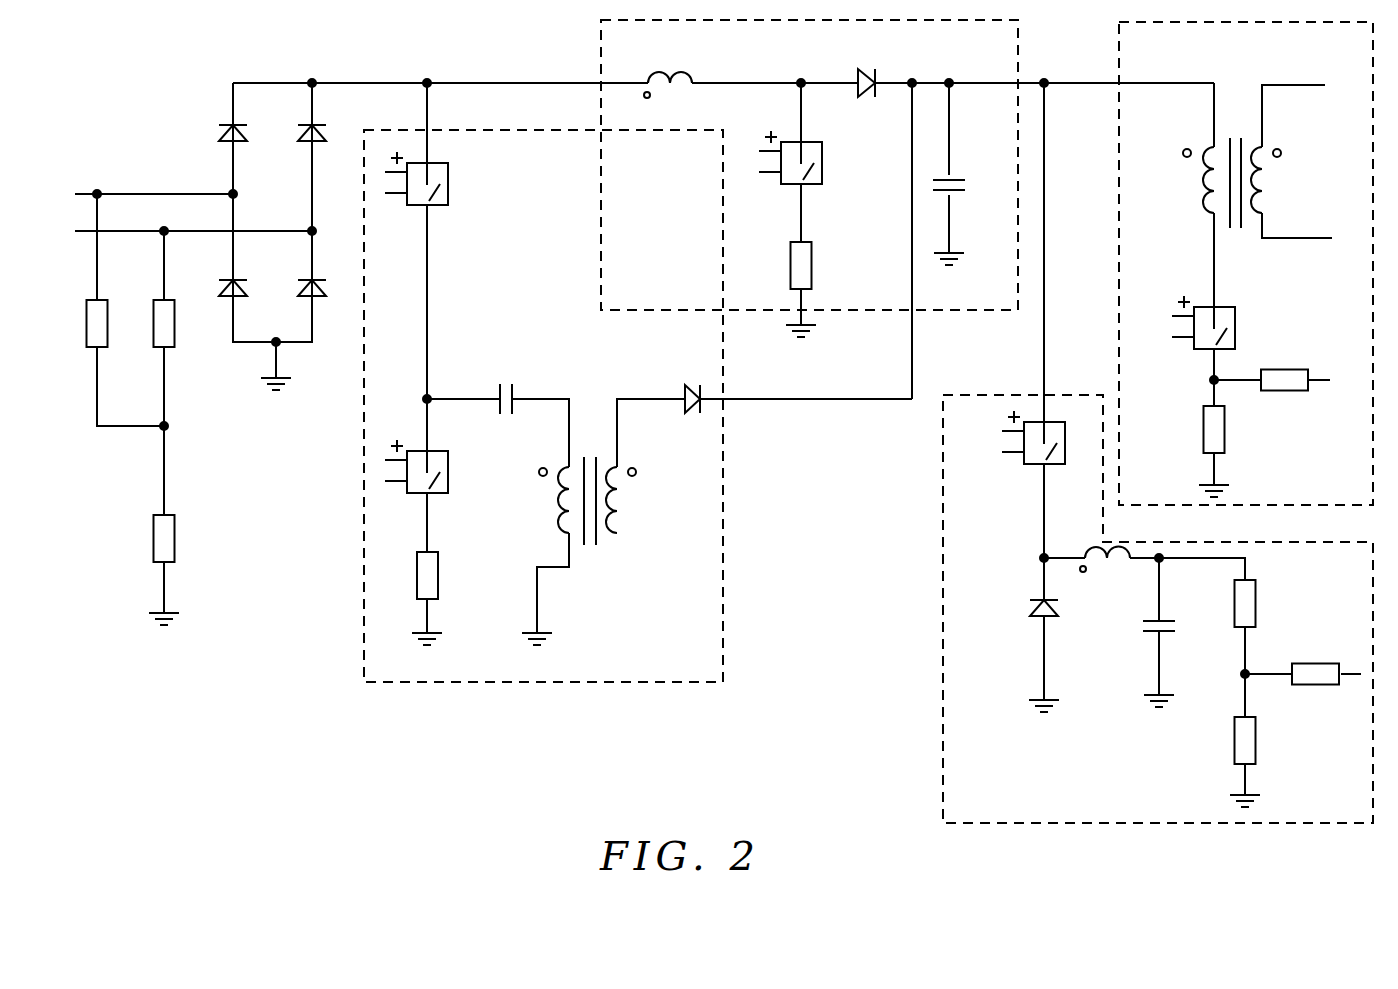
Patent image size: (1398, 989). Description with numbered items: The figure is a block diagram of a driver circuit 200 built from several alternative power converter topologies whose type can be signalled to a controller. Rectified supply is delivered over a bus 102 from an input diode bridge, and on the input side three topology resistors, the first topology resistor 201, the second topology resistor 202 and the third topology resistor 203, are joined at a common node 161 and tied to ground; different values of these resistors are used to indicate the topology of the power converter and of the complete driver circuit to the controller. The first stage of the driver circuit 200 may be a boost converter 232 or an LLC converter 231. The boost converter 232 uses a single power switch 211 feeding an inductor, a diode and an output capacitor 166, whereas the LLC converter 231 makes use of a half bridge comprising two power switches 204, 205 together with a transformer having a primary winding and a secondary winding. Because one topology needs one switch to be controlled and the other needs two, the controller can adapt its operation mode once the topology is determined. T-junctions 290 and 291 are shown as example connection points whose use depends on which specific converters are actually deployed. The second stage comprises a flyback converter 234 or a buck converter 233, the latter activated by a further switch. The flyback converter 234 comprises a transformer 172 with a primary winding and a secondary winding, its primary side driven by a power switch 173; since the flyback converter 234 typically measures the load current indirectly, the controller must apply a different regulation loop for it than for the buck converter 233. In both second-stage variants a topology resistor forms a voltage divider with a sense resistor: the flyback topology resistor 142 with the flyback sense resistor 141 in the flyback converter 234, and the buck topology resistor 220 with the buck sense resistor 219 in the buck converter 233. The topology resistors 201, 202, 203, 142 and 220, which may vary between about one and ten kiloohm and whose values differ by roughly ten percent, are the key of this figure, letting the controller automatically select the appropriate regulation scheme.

The DC bus / rectified supply line 102 is at (266, 78).
The driver circuit 200 is at (205, 678).
The resistor R M1 201 is at (93, 348).
The resistor R M2 202 is at (170, 345).
The resistor R M12 203 is at (178, 558).
The sense node 161 is at (142, 432).
The power switch SW2 204 is at (418, 208).
The power switch SW3 205 is at (418, 495).
The LLC converter 231 is at (723, 597).
The boost converter 232 is at (601, 39).
The power switch SW1 211 is at (792, 186).
The T-junction 290 is at (910, 77).
The capacitor C1 166 is at (968, 190).
The T-junction 291 is at (1042, 77).
The flyback converter 234 is at (1119, 243).
The transformer TX2 172 is at (1172, 163).
The switch SW4 173 is at (1193, 350).
The resistor R5 141 is at (1203, 432).
The resistor R M3 142 is at (1304, 396).
The buck converter 233 is at (943, 718).
The resistor R6 219 is at (1235, 746).
The resistor R M4 220 is at (1336, 690).